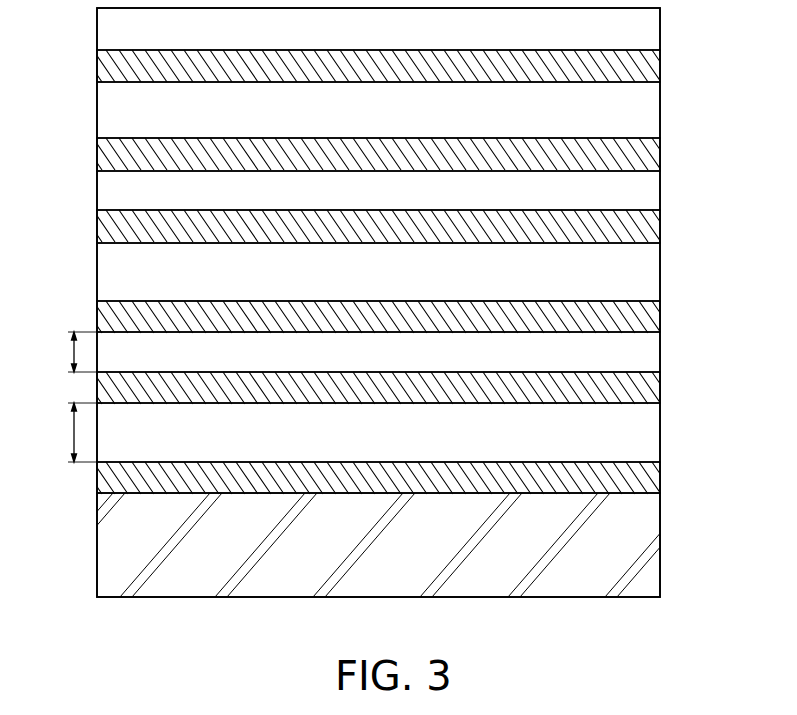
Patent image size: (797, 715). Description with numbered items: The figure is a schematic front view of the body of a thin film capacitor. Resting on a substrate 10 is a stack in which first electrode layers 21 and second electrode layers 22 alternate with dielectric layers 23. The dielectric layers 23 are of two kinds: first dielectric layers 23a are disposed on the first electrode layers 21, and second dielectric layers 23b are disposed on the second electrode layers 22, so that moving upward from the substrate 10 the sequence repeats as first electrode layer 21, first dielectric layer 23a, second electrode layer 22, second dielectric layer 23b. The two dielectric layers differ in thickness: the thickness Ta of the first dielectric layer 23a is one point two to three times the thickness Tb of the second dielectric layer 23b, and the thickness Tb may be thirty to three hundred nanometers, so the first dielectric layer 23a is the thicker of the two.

The substrate 10 is at (655, 538).
The first electrode layer 21 is at (104, 152).
The second electrode layer 22 is at (104, 61).
The dielectric layers 23 is at (732, 25).
The first dielectric layer 23a is at (652, 106).
The second dielectric layer 23b is at (652, 23).
The thickness of the first dielectric layer Ta is at (72, 435).
The thickness of the second dielectric layer Tb is at (72, 352).